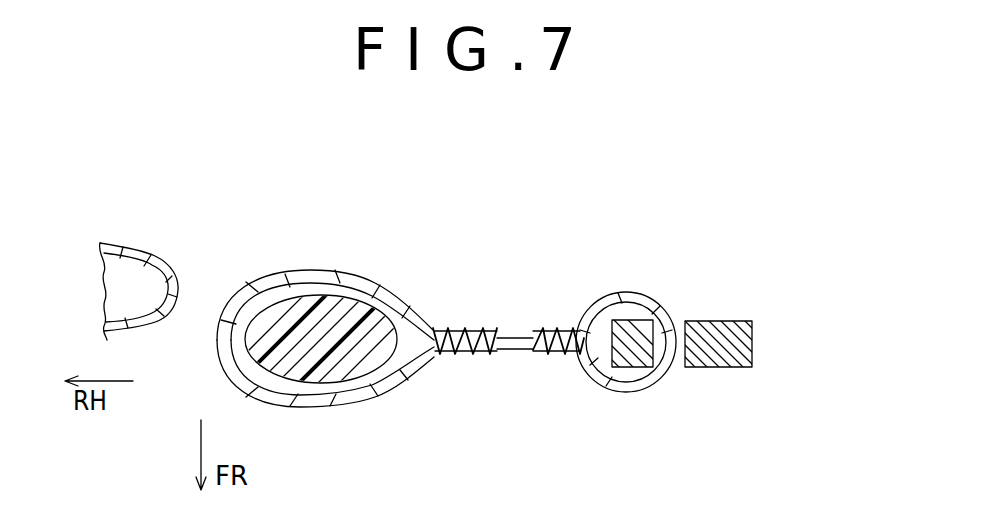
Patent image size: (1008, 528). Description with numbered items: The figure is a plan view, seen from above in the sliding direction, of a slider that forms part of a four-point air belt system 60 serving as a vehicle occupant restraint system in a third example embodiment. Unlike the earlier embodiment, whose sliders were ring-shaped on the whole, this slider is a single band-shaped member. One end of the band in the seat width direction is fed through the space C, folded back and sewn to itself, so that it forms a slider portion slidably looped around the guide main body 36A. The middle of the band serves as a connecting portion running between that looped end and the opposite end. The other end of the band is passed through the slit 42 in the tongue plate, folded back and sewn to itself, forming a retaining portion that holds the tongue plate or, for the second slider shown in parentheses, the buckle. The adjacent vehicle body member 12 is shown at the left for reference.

The vehicle body member 12 is at (178, 326).
The space C is at (202, 305).
The guide main body 36A is at (353, 311).
The four-point air belt system 60 is at (692, 270).
The slit 42 is at (680, 320).